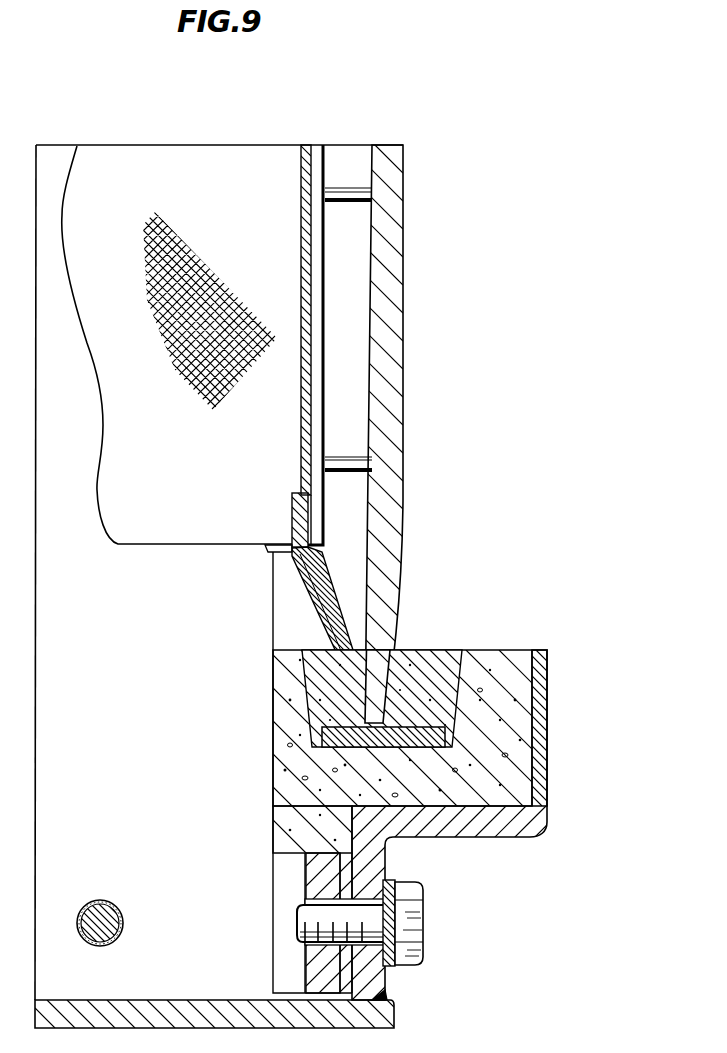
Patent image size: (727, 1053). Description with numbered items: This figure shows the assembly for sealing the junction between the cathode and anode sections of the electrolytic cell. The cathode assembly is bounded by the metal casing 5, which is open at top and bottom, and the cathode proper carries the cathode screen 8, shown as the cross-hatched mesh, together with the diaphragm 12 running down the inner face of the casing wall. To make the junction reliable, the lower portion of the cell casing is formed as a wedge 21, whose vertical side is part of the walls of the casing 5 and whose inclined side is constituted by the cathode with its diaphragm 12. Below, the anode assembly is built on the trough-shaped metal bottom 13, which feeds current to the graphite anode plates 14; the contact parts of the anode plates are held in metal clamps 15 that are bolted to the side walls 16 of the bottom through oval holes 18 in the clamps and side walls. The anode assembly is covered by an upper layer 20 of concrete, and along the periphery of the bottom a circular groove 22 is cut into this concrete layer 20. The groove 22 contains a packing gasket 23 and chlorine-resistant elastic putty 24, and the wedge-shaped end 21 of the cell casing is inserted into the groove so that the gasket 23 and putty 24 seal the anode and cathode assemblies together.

The metal casing 5 is at (395, 258).
The cathode screen 8 is at (193, 378).
The diaphragm 12 is at (288, 393).
The metal bottom 13 is at (148, 1003).
The graphite anode plate 14 is at (258, 632).
The metal clamp 15 is at (345, 968).
The side wall 16 is at (538, 787).
The oval hole 18 is at (368, 950).
The upper layer 20 is at (520, 742).
The wedge 21 is at (333, 592).
The circular groove 22 is at (465, 674).
The packing gasket 23 is at (322, 745).
The chlorine-resistant elastic putty 24 is at (312, 680).